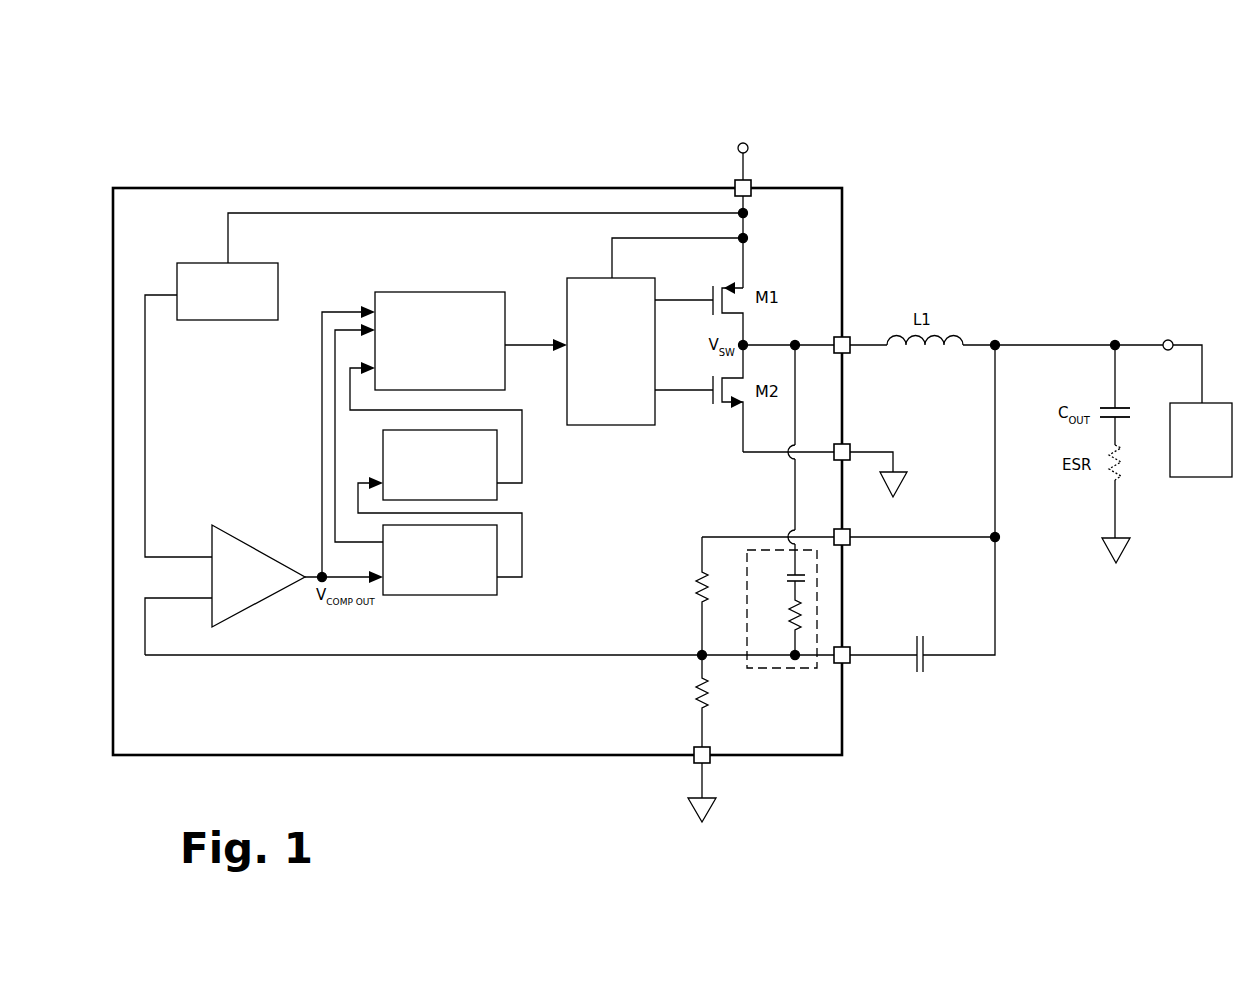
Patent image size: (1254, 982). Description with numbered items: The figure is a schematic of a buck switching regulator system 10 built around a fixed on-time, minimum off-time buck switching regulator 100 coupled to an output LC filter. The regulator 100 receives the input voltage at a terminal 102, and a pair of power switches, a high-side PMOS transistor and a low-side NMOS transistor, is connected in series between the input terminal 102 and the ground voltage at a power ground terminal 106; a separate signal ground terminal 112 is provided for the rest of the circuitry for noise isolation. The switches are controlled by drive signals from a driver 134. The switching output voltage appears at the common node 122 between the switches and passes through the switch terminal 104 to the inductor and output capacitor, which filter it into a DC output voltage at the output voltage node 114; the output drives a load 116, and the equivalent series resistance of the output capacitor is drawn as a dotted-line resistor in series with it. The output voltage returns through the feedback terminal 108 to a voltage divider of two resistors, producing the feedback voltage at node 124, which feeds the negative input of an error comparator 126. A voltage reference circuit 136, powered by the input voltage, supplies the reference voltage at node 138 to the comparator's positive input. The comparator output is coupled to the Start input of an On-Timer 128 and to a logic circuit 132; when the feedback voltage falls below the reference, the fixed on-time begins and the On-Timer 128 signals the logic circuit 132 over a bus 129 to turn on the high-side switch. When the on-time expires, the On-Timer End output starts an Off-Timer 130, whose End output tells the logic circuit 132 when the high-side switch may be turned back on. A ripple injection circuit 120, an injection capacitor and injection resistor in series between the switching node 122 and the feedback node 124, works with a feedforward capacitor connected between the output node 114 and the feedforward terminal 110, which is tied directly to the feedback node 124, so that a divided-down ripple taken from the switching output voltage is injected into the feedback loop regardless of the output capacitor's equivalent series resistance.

The buck switching regulator system 10 is at (985, 104).
The buck switching regulator 100 is at (310, 188).
The input voltage terminal 102 is at (752, 180).
The SW terminal 104 is at (850, 352).
The PGND terminal 106 is at (846, 460).
The FB terminal 108 is at (850, 545).
The feedforward FFWD terminal 110 is at (850, 663).
The signal ground terminal SGND 112 is at (694, 760).
The output voltage node 114 is at (1045, 345).
The load 116 is at (1186, 477).
The ripple injection circuit 120 is at (768, 668).
The common node 122 is at (799, 352).
The feedback voltage node 124 is at (697, 659).
The error comparator 126 is at (247, 541).
The On-Timer 128 is at (431, 597).
The bus 129 is at (336, 405).
The Off-Timer 130 is at (382, 475).
The logic circuit 132 is at (460, 292).
The driver 134 is at (611, 351).
The voltage reference circuit 136 is at (278, 290).
The reference voltage node 138 is at (145, 380).